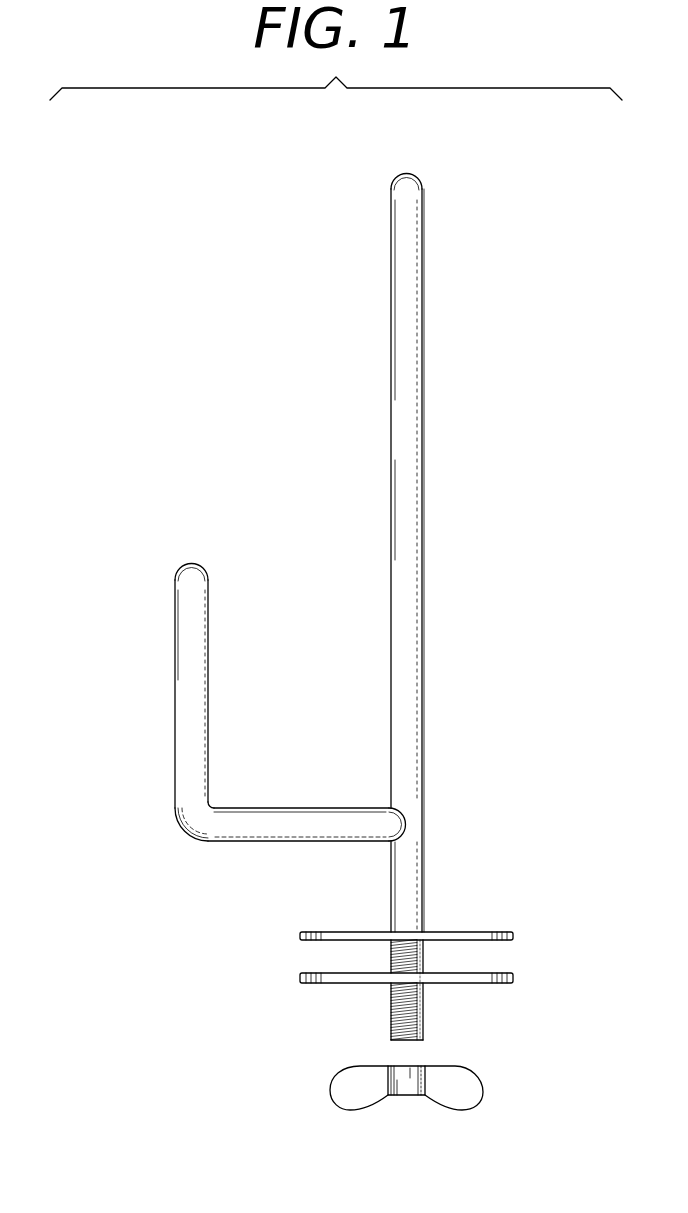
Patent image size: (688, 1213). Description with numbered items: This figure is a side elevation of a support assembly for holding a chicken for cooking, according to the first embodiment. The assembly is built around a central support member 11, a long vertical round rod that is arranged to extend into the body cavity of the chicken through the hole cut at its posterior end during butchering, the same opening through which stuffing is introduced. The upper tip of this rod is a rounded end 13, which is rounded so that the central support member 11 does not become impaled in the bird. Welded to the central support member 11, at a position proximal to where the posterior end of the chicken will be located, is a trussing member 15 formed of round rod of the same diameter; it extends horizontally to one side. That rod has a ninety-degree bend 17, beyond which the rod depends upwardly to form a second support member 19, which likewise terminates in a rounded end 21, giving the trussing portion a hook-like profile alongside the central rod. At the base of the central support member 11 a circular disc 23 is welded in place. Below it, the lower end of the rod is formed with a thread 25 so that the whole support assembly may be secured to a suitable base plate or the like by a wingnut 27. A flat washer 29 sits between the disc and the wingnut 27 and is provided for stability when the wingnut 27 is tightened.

The central support member 11 is at (423, 468).
The rounded end 13 is at (422, 181).
The trussing member 15 is at (287, 842).
The bend 17 is at (185, 832).
The second support member 19 is at (177, 632).
The rounded end 21 is at (180, 572).
The circular disc 23 is at (513, 933).
The thread 25 is at (423, 1027).
The wingnut 27 is at (477, 1110).
The flat washer 29 is at (513, 976).